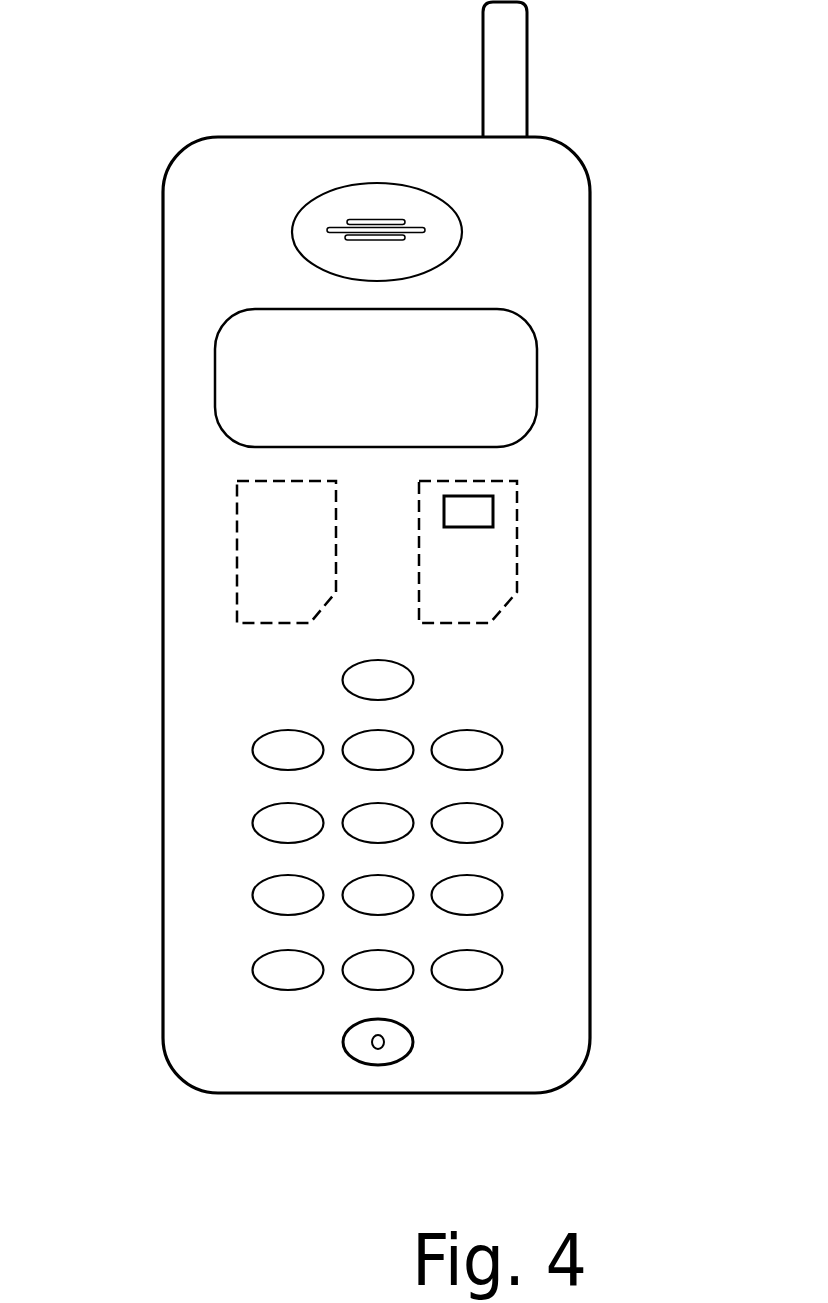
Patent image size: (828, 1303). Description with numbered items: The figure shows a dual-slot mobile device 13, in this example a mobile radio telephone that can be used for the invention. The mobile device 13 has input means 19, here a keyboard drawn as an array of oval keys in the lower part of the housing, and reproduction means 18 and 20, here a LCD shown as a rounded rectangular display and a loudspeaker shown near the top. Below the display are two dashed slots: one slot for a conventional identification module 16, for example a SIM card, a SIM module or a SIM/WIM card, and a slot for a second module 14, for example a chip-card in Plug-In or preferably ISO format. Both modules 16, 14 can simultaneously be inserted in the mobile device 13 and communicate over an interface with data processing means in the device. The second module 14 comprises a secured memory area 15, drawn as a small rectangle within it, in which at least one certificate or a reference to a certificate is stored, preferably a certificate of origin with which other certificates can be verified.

The mobile device 13 is at (183, 1085).
The second module 14 is at (478, 575).
The secured memory area 15 is at (480, 510).
The identification module 16 is at (270, 573).
The reproduction means 18 is at (518, 375).
The input means 19 is at (270, 820).
The reproduction means 20 is at (378, 198).